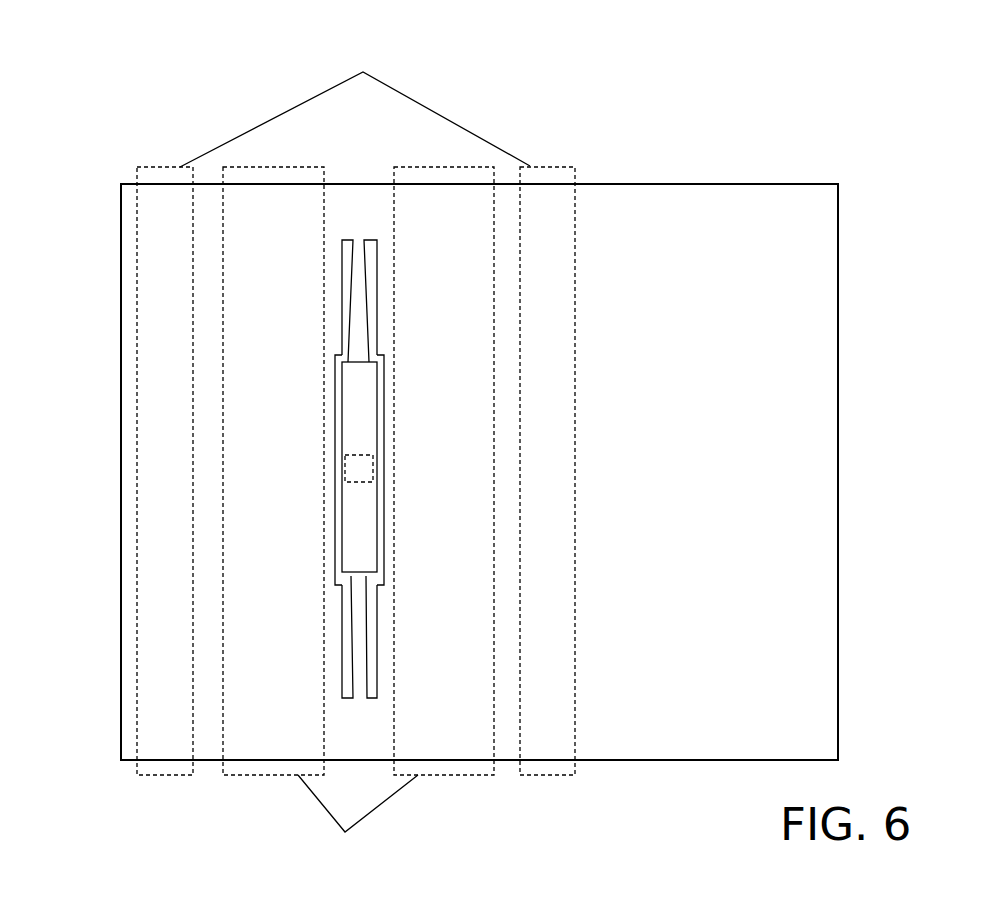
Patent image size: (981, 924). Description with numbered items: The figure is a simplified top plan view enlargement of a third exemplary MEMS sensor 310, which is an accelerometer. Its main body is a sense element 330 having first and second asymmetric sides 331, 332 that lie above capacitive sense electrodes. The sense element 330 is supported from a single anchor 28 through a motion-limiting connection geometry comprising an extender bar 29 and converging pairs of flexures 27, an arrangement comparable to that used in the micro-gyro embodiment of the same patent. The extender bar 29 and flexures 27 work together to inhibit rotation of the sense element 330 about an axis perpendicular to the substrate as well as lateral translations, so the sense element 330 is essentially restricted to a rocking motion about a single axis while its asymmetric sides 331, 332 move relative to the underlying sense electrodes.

The converging pairs of flexures 27 is at (354, 318).
The single anchor 28 is at (372, 470).
The extender bar 29 is at (378, 513).
The MEMS sensor 310 is at (697, 143).
The sense element 330 is at (768, 745).
The first asymmetric side 331 is at (121, 463).
The second asymmetric side 332 is at (810, 510).